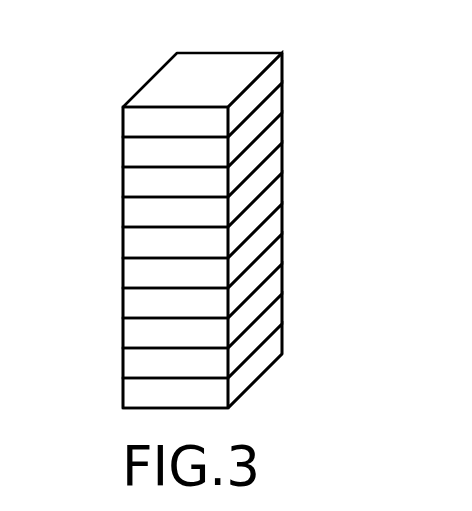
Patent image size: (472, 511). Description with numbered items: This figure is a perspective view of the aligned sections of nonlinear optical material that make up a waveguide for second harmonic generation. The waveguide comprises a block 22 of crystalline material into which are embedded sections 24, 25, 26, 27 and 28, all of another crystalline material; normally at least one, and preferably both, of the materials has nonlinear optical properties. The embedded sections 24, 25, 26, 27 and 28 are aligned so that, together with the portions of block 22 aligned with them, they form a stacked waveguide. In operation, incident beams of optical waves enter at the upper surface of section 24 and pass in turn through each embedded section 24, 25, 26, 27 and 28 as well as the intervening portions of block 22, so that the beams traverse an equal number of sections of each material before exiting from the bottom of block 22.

The block 22 is at (122, 151).
The section 24 is at (283, 69).
The section 25 is at (283, 128).
The section 26 is at (283, 188).
The section 27 is at (283, 247).
The section 28 is at (283, 307).